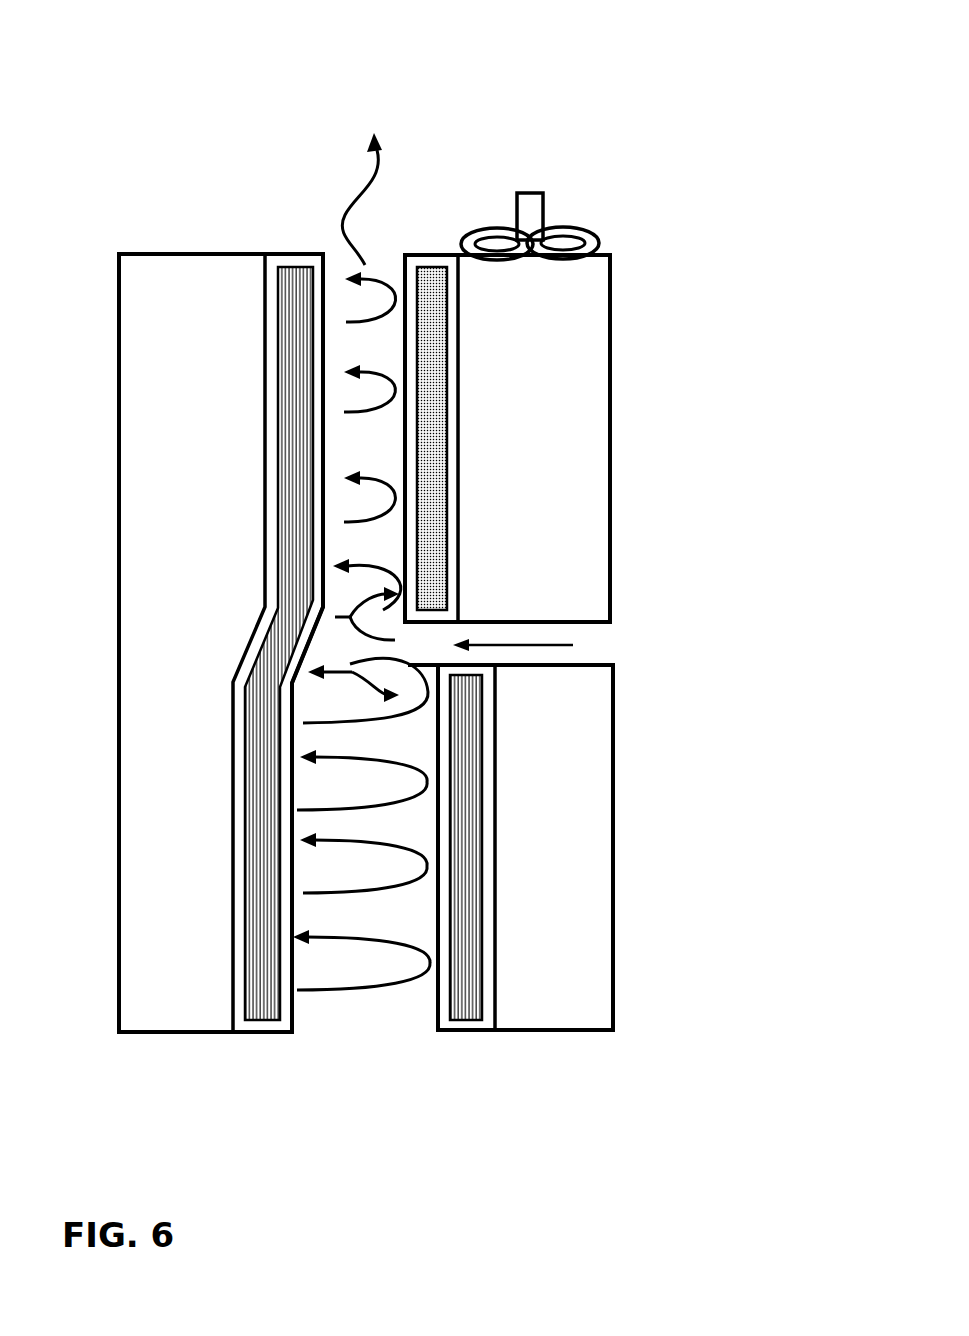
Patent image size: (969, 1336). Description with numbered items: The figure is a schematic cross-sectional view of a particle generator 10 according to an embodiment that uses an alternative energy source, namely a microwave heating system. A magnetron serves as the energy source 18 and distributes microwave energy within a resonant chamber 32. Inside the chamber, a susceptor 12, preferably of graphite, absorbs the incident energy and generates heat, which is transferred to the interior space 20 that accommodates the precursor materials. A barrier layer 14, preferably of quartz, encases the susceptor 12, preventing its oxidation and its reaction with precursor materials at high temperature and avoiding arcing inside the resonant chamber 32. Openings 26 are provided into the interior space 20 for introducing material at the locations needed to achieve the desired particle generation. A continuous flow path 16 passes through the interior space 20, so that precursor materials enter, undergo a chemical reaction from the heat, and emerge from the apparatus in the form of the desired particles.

The particle generator 10 is at (505, 106).
The susceptor 12 is at (256, 990).
The barrier layer 14 is at (446, 990).
The continuous flow path 16 is at (380, 199).
The energy source 18 is at (587, 242).
The interior space 20 is at (345, 265).
The openings 26 is at (593, 640).
The resonant chamber 32 is at (170, 665).